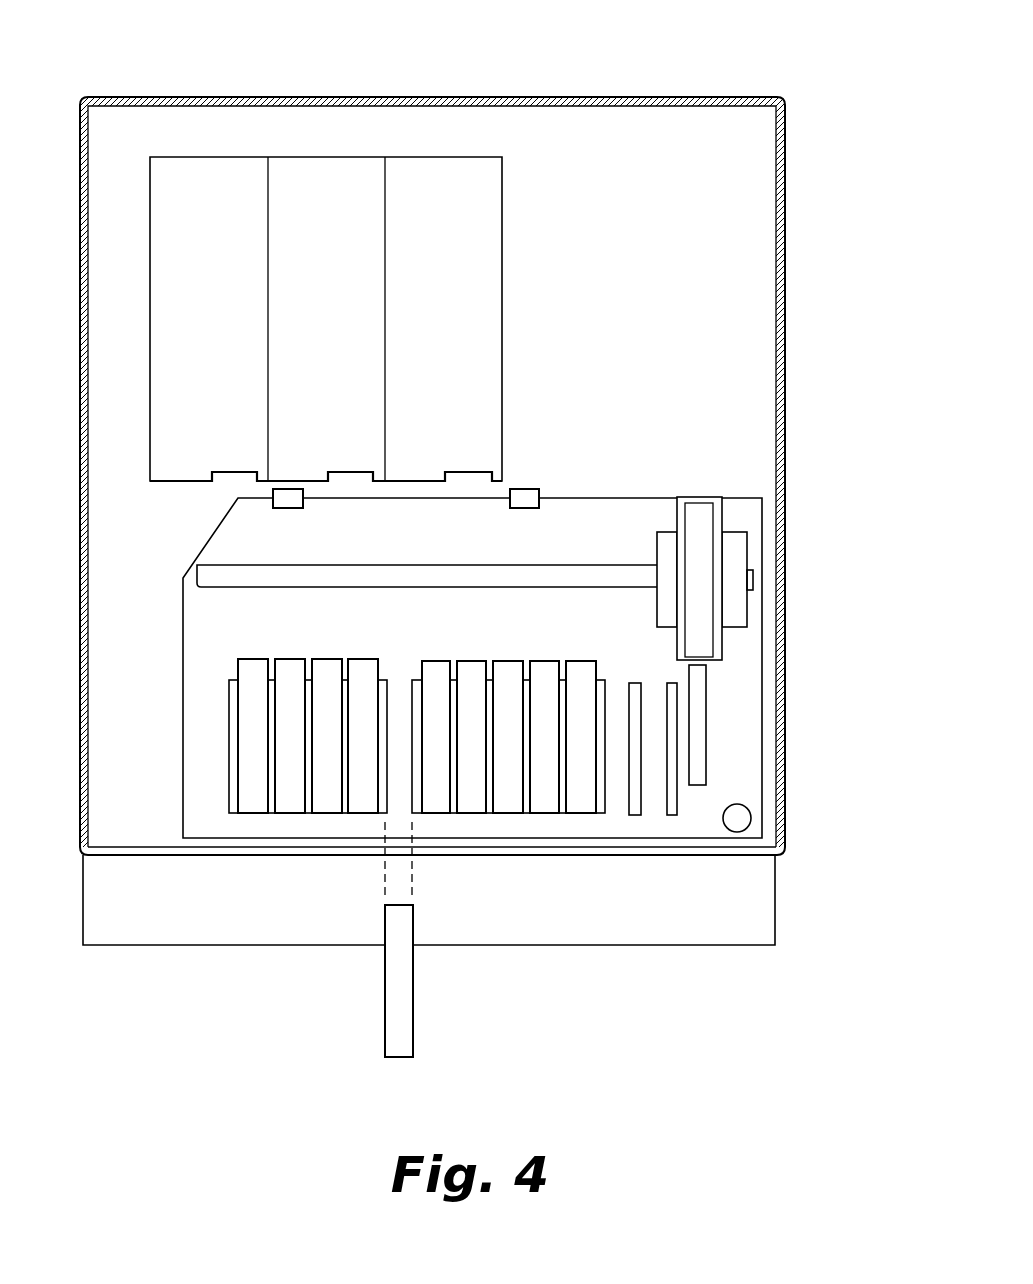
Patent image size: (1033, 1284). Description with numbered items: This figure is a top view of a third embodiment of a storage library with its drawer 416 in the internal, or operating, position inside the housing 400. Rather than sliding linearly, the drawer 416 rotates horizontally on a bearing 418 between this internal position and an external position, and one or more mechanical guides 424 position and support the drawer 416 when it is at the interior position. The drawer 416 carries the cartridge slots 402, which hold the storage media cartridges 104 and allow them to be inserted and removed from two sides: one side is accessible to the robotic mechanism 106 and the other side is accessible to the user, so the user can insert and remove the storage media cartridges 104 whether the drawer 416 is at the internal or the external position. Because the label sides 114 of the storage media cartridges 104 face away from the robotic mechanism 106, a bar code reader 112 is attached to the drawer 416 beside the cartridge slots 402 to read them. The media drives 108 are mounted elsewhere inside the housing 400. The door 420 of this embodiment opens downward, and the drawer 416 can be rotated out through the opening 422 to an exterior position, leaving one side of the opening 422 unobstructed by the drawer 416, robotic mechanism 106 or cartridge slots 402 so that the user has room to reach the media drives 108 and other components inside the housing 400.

The storage media cartridges 104 is at (695, 595).
The robotic mechanism 106 is at (731, 521).
The media drives 108 is at (192, 175).
The bar code reader 112 is at (702, 745).
The label sides 114 is at (698, 667).
The housing 400 is at (785, 413).
The cartridge slots 402 is at (619, 795).
The drawer 416 is at (203, 677).
The bearing 418 is at (752, 818).
The door 420 is at (135, 927).
The opening 422 is at (139, 838).
The mechanical guides 424 is at (287, 489).